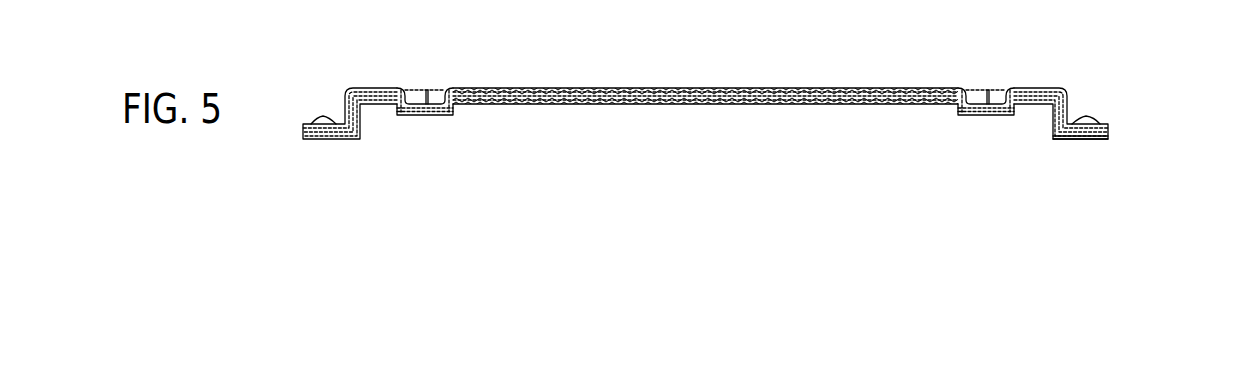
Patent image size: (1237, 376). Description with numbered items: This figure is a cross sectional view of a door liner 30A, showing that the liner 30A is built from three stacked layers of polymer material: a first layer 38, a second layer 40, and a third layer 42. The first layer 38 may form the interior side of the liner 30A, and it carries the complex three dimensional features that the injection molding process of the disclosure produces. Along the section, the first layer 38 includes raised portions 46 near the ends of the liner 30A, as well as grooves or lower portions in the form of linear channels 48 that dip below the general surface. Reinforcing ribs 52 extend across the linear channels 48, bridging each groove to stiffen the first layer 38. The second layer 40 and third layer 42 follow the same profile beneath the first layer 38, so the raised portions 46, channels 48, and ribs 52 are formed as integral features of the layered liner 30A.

The liner 30A is at (843, 104).
The raised portions 46 is at (375, 88).
The linear channels 48 is at (428, 90).
The reinforcing ribs 52 is at (438, 92).
The first layer of polymer material 38 is at (1108, 128).
The second layer of polymer material 40 is at (1107, 130).
The third layer of polymer material 42 is at (1108, 135).